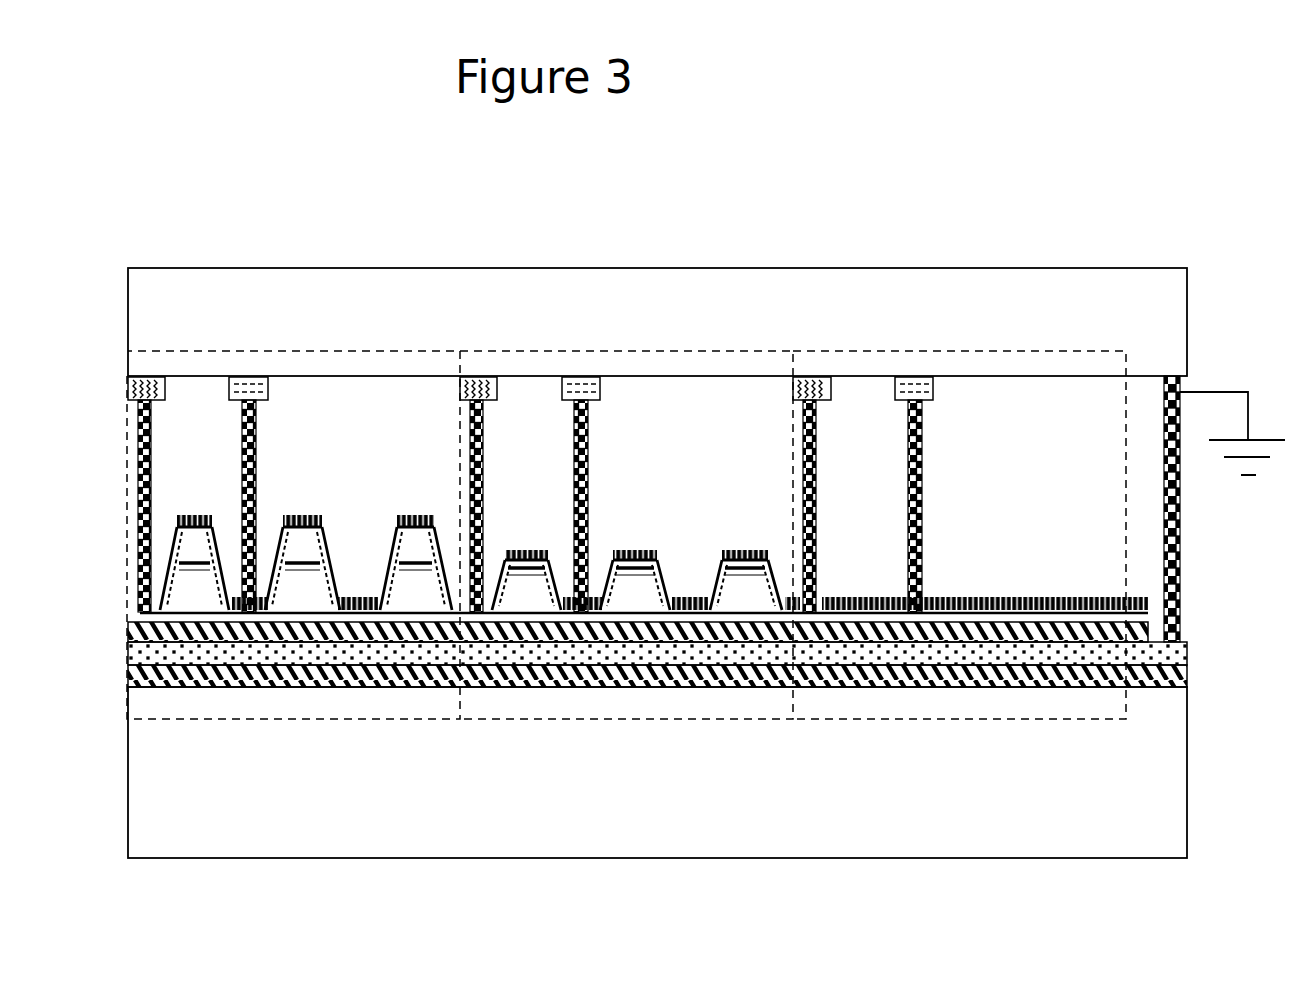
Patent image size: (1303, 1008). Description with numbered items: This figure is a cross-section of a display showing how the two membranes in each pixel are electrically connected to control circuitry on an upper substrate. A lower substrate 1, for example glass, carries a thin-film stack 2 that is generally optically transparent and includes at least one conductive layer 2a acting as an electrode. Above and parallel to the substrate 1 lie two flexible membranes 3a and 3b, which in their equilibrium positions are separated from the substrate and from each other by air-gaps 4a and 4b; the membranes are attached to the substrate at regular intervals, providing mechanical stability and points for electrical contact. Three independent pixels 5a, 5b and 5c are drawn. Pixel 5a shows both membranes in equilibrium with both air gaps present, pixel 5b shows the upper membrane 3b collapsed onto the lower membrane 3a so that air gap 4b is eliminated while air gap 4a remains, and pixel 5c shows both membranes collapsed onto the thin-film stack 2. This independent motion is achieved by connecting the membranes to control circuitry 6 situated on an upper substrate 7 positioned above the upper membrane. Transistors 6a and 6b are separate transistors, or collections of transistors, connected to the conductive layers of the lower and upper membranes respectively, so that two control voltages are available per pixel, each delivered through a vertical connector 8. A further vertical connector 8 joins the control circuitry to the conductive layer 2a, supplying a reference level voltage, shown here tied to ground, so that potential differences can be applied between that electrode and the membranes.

The lower substrate 1 is at (150, 768).
The thin-film stack 2 is at (673, 654).
The conductive layer 2a is at (1077, 653).
The lower flexible membrane 3a is at (520, 556).
The upper flexible membrane 3b is at (633, 556).
The first air-gap 4a is at (302, 590).
The second air-gap 4b is at (414, 547).
The first pixel 5a is at (302, 351).
The second pixel 5b is at (633, 351).
The third pixel 5c is at (968, 351).
The control circuitry 6 is at (110, 391).
The first transistor 6a is at (831, 400).
The second transistor 6b is at (933, 396).
The upper substrate 7 is at (150, 320).
The vertical connector 8 is at (142, 500).